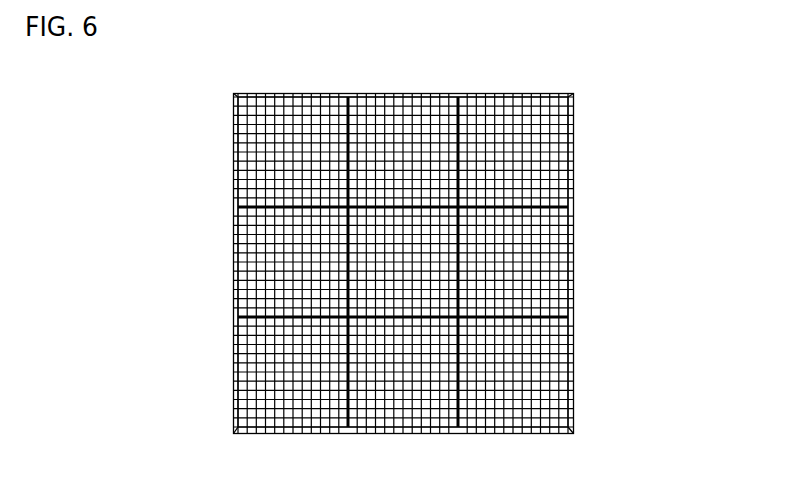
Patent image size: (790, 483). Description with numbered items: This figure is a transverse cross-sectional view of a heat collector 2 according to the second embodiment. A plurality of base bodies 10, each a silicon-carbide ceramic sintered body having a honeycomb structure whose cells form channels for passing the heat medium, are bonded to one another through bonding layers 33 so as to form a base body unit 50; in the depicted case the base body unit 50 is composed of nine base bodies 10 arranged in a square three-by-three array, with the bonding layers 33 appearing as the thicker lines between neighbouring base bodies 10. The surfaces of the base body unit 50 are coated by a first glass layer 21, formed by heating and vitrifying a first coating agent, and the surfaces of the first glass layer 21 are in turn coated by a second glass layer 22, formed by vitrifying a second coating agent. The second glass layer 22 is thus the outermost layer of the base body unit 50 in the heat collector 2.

The heat collector 2 is at (671, 120).
The base body 10 is at (400, 124).
The first glass layer 21 is at (574, 276).
The second glass layer 22 is at (571, 350).
The bonding layer 33 is at (349, 117).
The base body unit 50 is at (229, 232).